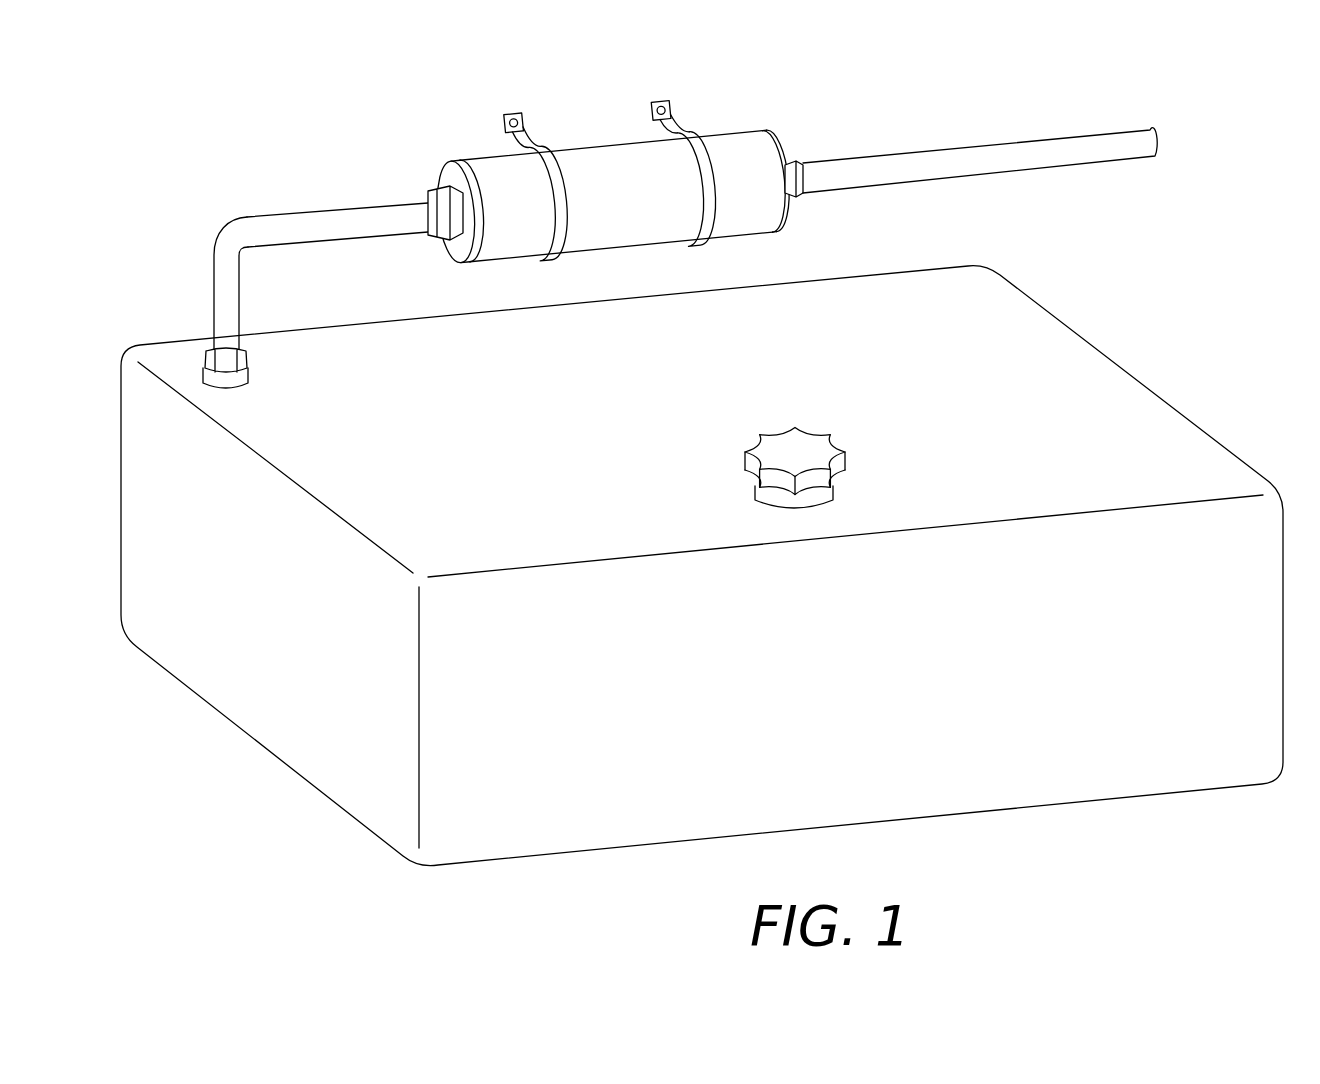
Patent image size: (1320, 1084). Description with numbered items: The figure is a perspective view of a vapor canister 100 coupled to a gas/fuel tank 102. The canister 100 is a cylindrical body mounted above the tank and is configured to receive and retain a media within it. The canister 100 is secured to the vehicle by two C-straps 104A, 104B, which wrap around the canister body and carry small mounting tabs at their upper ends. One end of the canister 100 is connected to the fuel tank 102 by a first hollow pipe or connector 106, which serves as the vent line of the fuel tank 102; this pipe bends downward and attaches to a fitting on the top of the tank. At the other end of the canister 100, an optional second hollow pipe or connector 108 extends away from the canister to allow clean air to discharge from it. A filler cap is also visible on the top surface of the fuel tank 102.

The vapor canister 100 is at (478, 140).
The fuel tank 102 is at (1037, 363).
The C-strap 104A is at (527, 137).
The C-strap 104B is at (675, 125).
The first hollow pipe or connector 106 is at (317, 223).
The second hollow pipe/connector 108 is at (928, 163).